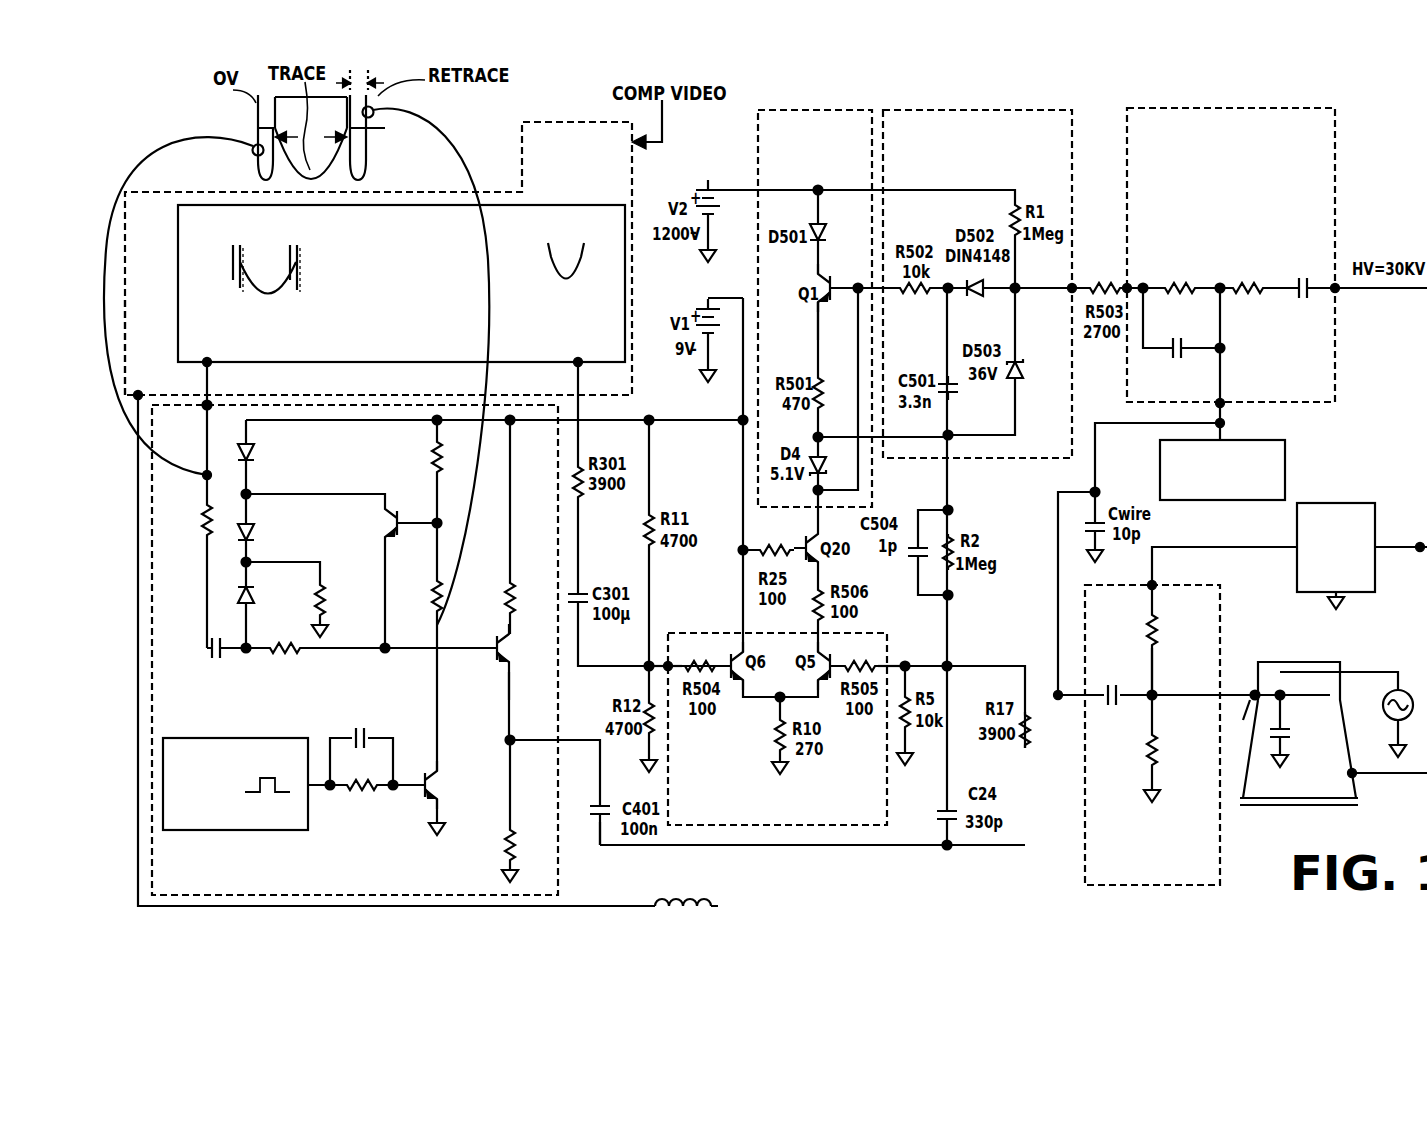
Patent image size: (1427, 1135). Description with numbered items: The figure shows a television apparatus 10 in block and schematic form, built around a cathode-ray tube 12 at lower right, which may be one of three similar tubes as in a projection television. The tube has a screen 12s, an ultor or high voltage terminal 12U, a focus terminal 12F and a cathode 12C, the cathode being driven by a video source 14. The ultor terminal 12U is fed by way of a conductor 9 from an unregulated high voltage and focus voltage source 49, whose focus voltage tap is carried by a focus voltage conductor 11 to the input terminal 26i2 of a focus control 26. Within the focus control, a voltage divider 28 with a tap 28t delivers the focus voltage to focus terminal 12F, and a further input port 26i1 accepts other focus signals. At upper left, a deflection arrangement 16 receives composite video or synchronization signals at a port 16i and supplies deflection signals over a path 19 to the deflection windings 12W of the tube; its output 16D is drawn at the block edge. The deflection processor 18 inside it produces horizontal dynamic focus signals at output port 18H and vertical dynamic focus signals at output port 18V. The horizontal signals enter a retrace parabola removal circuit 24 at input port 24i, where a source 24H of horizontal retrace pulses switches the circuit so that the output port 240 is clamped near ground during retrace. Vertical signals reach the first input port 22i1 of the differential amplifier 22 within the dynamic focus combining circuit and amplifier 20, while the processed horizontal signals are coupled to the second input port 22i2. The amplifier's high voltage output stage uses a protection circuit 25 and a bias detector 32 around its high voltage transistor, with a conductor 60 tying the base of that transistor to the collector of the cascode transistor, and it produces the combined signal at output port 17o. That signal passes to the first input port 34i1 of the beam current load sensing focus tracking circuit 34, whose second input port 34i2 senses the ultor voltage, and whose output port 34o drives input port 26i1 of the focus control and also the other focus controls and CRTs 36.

The high voltage conductor 9 is at (1405, 545).
The television apparatus 10 is at (444, 649).
The focus voltage conductor 11 is at (1290, 545).
The cathode-ray tube 12 is at (1352, 780).
The cathode 12C is at (1318, 660).
The focus terminal 12F is at (1250, 697).
The ultor terminal 12U is at (1350, 770).
The deflection windings 12W is at (683, 890).
The screen 12s is at (1243, 808).
The video source 14 is at (1402, 690).
The deflection arrangement 16 is at (552, 122).
The deflection output 16D is at (125, 305).
The port 16i is at (634, 145).
The output port 17o is at (1070, 294).
The deflection processor 18 is at (572, 203).
The output port 18H is at (200, 364).
The output port 18V is at (572, 366).
The path 19 is at (622, 905).
The dynamic focus combining circuit and amplifier 20 is at (697, 710).
The differential amplifier 22 is at (708, 825).
The first input port 22i1 is at (668, 660).
The second input port 22i2 is at (887, 660).
The retrace parabola removal circuit 24 is at (447, 648).
The source of horizontal retrace pulses 24H is at (260, 738).
The input port 24i is at (205, 415).
The output port 240 is at (505, 678).
The Q1 protection circuit 25 is at (757, 120).
The focus control 26 is at (1222, 592).
The input port 26i1 is at (1066, 690).
The input terminal 26i2 is at (1155, 583).
The voltage divider 28 is at (1139, 735).
The tap 28t is at (1148, 690).
The Q1 bias detector circuit 32 is at (1058, 114).
The beam current load sensing focus tracking circuit 34 is at (1322, 108).
The first input port 34i1 is at (1125, 285).
The second input port 34i2 is at (1340, 295).
The output port 34o is at (1226, 400).
The other focus controls and CRTs 36 is at (1286, 455).
The high voltage and focus voltage source 49 is at (1336, 544).
The conductor 60 is at (822, 312).